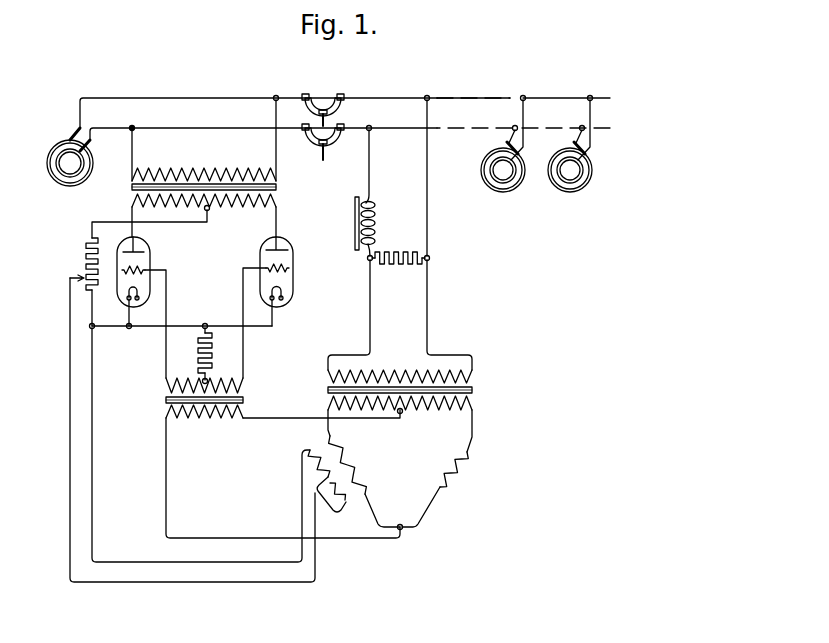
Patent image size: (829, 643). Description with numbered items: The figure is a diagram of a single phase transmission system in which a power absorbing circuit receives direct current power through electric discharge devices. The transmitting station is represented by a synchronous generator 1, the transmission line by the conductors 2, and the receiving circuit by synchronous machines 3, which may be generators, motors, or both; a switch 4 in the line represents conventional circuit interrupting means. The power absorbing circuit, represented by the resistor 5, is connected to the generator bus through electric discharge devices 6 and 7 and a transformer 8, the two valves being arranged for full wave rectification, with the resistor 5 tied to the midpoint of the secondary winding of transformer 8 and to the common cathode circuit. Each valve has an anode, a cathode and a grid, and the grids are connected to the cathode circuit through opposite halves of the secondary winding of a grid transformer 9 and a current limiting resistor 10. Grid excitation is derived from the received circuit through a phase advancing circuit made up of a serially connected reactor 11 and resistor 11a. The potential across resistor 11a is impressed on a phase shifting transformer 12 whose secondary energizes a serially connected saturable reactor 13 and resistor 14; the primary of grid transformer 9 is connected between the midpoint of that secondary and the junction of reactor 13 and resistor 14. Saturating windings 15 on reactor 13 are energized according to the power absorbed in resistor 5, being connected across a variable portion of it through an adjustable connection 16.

The synchronous generator 1 is at (57, 178).
The conductors 2 is at (385, 128).
The synchronous machines 3 is at (553, 185).
The switch 4 is at (318, 106).
The resistor 5 is at (85, 250).
The electric discharge device 6 is at (151, 260).
The electric discharge device 7 is at (294, 258).
The transformer 8 is at (277, 188).
The grid transformer 9 is at (243, 401).
The current limiting resistor 10 is at (209, 358).
The reactor 11 is at (374, 212).
The resistor 11a is at (400, 253).
The transformer 12 is at (472, 390).
The saturable reactor 13 is at (342, 456).
The resistor 14 is at (443, 469).
The saturating windings 15 is at (308, 450).
The adjustable connection 16 is at (68, 278).